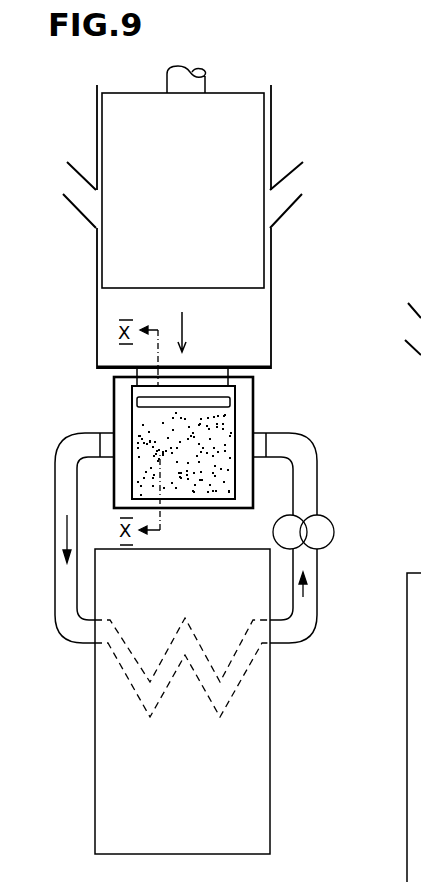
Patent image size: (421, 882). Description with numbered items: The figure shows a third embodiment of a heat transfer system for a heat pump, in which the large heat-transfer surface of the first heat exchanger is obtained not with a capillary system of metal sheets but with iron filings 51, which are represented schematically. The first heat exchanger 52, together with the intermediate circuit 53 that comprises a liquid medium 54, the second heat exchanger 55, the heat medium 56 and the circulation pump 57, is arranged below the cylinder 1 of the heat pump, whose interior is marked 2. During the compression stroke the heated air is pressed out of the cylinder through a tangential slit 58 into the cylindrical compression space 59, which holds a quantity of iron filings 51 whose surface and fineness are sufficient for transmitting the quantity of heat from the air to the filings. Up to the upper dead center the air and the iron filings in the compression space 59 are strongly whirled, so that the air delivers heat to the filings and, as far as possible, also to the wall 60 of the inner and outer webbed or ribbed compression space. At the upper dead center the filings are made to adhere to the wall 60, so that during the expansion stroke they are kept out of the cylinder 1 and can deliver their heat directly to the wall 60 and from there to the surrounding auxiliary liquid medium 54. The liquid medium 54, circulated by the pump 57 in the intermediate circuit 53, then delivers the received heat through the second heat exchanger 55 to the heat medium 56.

The cylinder 1 is at (271, 311).
The bath 2 is at (196, 218).
The iron filings 51 is at (215, 428).
The first heat exchanger 52 is at (104, 399).
The intermediate circuit 53 is at (313, 434).
The liquid medium 54 is at (264, 456).
The second heat exchanger 55 is at (224, 714).
The heat medium 56 is at (250, 811).
The circulation pump 57 is at (322, 538).
The tangential slit 58 is at (194, 404).
The compression space 59 is at (208, 490).
The wall of the compression space 60 is at (131, 468).